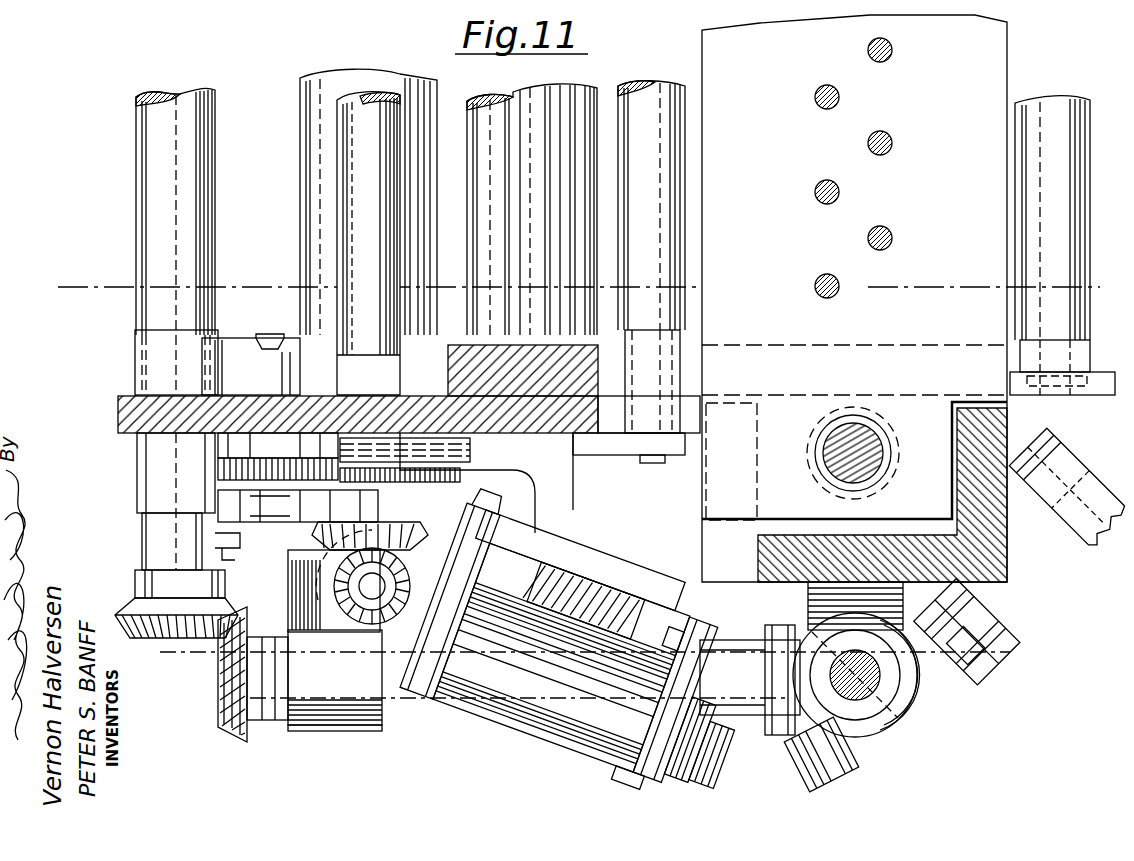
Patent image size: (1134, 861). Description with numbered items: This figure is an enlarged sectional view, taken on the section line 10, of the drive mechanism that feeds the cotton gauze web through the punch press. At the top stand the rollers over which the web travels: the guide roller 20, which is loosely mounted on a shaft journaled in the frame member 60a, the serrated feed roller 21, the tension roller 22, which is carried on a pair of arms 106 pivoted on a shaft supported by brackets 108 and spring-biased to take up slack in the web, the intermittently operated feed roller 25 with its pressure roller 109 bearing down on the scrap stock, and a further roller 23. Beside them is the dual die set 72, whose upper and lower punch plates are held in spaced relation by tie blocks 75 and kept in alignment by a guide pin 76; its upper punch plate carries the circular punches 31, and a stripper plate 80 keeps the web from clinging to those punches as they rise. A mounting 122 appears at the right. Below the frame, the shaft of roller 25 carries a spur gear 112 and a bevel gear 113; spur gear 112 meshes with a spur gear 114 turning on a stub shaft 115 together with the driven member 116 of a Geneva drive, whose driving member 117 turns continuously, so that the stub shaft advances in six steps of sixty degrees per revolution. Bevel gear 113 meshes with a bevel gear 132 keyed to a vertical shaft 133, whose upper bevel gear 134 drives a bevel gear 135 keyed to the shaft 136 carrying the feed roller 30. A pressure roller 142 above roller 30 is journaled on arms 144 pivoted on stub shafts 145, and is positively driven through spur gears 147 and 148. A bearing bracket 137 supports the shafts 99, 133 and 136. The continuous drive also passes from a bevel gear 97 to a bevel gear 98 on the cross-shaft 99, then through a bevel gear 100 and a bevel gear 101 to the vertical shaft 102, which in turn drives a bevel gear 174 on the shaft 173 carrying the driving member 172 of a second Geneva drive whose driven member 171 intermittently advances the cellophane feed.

The section line 10 is at (1114, 276).
The guide roller 20 is at (136, 206).
The serrated feed roller 21 is at (496, 99).
The tension roller 22 is at (644, 95).
The cylinder 23 is at (1086, 191).
The feed roller 25 is at (302, 140).
The feed roller 30 is at (480, 700).
The circular punches 31 is at (894, 140).
The frame member 60a is at (118, 425).
The dual die set 72 is at (1040, 426).
The tie blocks 75 is at (772, 534).
The guide pin 76 is at (872, 456).
The stripper plate 80 is at (992, 72).
The bevel gear 97 is at (185, 625).
The bevel gear 98 is at (218, 718).
The cross-shaft 99 is at (395, 705).
The bevel gear 100 is at (806, 614).
The bevel gear 101 is at (906, 709).
The vertical shaft 102 is at (870, 700).
The arms 106 is at (651, 427).
The brackets 108 is at (608, 452).
The pressure roller 109 is at (356, 200).
The spur gear 112 is at (425, 460).
The bevel gear 113 is at (400, 521).
The spur gear 114 is at (310, 456).
The stub shaft 115 is at (215, 545).
The driven member of Geneva drive 116 is at (300, 512).
The driving member of Geneva drive 117 is at (148, 530).
The mounting block 122 is at (1084, 353).
The bevel gear 132 is at (322, 590).
The vertical shaft 133 is at (358, 600).
The bevel gear 134 is at (360, 702).
The bevel gear 135 is at (542, 553).
The shaft 136 is at (692, 784).
The bearing bracket 137 is at (300, 731).
The pressure roller 142 is at (548, 742).
The arms 144 is at (480, 609).
The stub shafts 145 is at (536, 537).
The spur gear 147 is at (692, 756).
The spur gear 148 is at (622, 784).
The driven member of second Geneva drive 171 is at (1020, 648).
The driving member of second Geneva drive 172 is at (985, 666).
The shaft 173 is at (1058, 485).
The bevel gear 174 is at (852, 768).